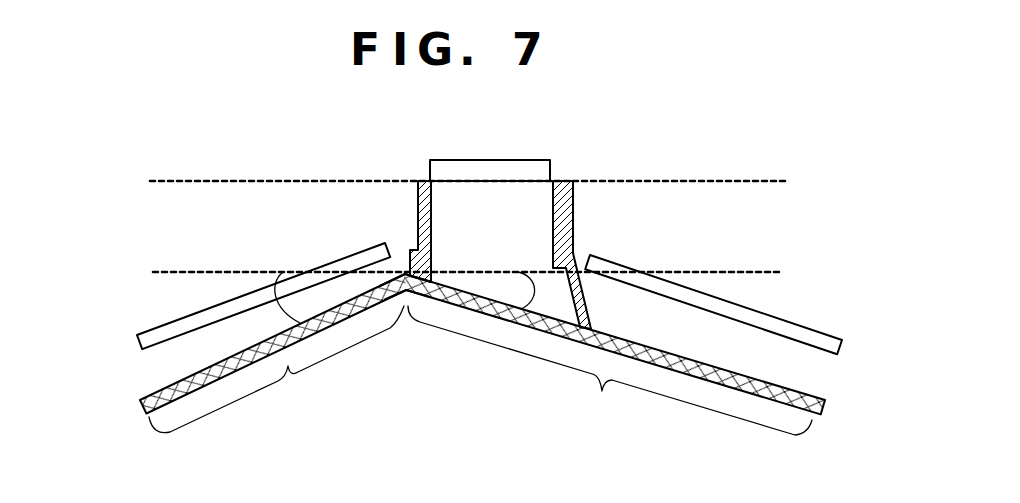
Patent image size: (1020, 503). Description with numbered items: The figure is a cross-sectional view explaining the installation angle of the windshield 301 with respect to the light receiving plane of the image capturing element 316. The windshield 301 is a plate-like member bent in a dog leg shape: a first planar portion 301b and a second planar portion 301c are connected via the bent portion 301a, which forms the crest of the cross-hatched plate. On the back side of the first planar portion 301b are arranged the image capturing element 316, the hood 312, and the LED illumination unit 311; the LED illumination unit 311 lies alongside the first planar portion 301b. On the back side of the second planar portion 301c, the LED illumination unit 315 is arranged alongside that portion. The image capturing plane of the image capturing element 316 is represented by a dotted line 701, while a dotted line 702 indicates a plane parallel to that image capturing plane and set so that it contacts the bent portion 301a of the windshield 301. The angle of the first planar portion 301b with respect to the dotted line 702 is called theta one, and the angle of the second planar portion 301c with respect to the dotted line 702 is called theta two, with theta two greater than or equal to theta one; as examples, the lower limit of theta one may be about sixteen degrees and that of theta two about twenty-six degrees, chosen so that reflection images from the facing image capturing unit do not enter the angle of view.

The windshield 301 is at (150, 416).
The bent portion 301a is at (405, 300).
The first planar portion 301b is at (615, 352).
The second planar portion 301c is at (275, 351).
The LED illumination unit 311 is at (750, 313).
The hood 312 is at (568, 230).
The LED illumination unit 315 is at (172, 325).
The image capturing element 316 is at (535, 161).
The dotted line 701 is at (742, 181).
The dotted line 702 is at (742, 271).